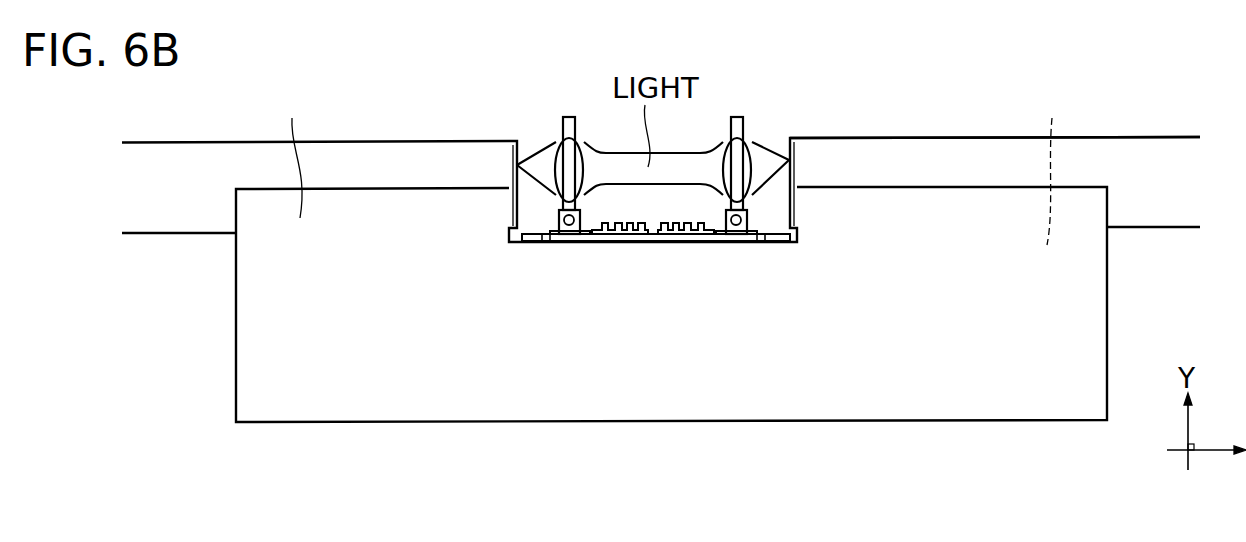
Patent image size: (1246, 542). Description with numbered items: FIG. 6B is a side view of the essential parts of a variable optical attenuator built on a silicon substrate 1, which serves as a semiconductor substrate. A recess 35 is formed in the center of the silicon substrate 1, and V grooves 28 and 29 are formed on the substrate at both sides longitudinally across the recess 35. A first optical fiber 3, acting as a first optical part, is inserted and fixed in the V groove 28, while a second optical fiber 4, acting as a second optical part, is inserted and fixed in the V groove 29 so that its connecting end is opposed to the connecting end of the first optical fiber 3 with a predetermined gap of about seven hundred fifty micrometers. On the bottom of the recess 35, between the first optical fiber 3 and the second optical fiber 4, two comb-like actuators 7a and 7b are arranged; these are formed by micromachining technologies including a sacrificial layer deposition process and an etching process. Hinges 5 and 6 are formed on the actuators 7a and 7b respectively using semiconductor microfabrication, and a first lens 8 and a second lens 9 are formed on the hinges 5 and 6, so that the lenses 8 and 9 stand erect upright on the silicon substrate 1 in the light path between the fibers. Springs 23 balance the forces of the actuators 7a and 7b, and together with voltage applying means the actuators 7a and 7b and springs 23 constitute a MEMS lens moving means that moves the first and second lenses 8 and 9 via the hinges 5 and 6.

The silicon substrate 1 is at (1138, 305).
The first optical fiber 3 is at (393, 165).
The second optical fiber 4 is at (933, 165).
The hinge 5 is at (542, 236).
The hinge 6 is at (747, 217).
The comb-like actuator 7a is at (575, 241).
The comb-like actuator 7b is at (740, 242).
The first lens 8 is at (550, 146).
The second lens 9 is at (757, 158).
The springs 23 is at (675, 242).
The V groove 28 is at (296, 151).
The V groove 29 is at (1059, 164).
The recess 35 is at (527, 214).